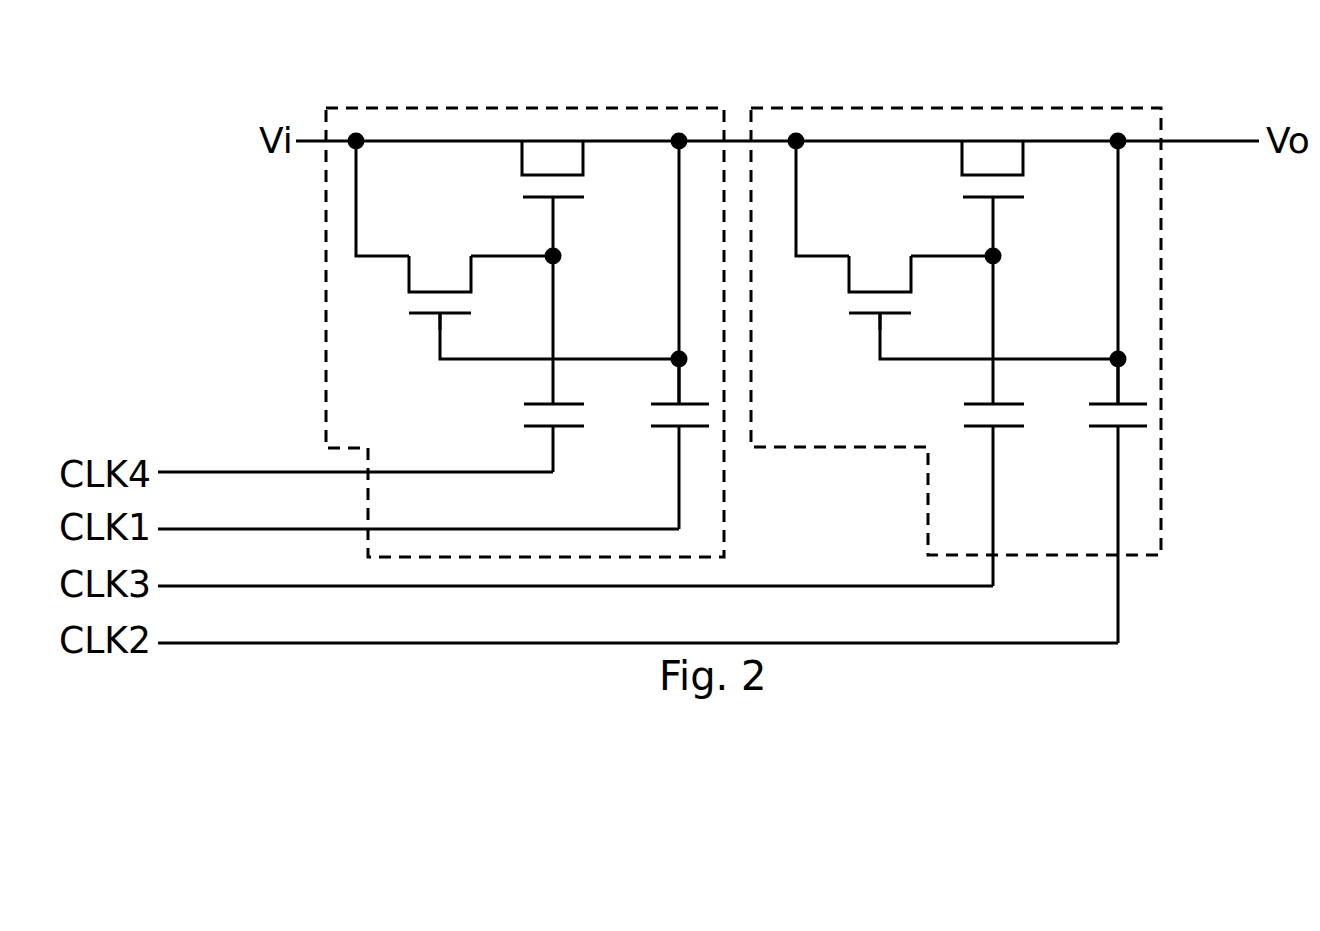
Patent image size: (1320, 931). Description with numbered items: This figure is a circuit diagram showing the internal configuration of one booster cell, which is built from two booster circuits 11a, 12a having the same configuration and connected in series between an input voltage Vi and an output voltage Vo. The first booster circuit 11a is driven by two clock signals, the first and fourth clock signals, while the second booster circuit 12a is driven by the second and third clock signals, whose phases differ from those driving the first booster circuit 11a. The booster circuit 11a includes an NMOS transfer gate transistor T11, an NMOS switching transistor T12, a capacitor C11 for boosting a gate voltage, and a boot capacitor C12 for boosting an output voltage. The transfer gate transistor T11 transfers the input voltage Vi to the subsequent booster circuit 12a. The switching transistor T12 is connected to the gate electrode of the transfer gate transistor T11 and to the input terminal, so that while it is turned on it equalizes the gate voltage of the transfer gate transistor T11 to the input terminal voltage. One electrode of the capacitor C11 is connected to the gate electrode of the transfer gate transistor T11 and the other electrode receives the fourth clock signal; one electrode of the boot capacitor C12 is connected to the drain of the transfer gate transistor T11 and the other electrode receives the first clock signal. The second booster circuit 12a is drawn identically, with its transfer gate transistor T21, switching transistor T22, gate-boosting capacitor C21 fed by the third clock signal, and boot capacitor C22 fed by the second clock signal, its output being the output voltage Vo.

The booster circuit 11a is at (383, 106).
The booster circuit 12a is at (1100, 106).
The NMOS transfer gate transistor T11 is at (521, 160).
The NMOS switching transistor T12 is at (408, 277).
The capacitor for boosting a gate voltage C11 is at (540, 402).
The boot capacitor C12 is at (664, 427).
The NMOS transfer gate transistor T21 is at (961, 160).
The NMOS switching transistor T22 is at (848, 277).
The capacitor for boosting a gate voltage C21 is at (980, 402).
The boot capacitor C22 is at (1104, 427).